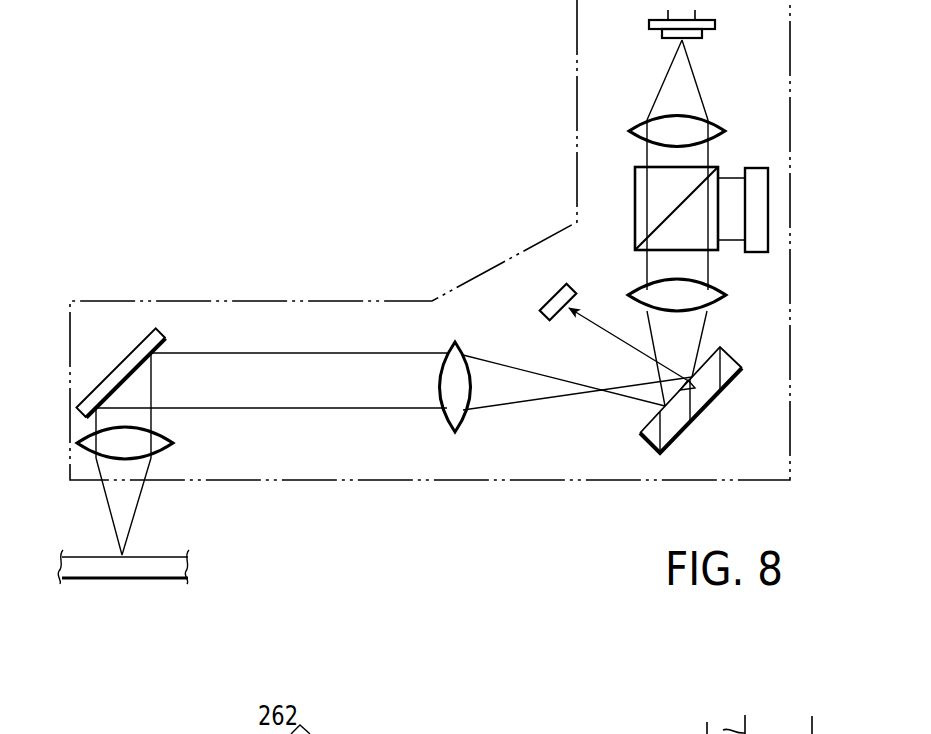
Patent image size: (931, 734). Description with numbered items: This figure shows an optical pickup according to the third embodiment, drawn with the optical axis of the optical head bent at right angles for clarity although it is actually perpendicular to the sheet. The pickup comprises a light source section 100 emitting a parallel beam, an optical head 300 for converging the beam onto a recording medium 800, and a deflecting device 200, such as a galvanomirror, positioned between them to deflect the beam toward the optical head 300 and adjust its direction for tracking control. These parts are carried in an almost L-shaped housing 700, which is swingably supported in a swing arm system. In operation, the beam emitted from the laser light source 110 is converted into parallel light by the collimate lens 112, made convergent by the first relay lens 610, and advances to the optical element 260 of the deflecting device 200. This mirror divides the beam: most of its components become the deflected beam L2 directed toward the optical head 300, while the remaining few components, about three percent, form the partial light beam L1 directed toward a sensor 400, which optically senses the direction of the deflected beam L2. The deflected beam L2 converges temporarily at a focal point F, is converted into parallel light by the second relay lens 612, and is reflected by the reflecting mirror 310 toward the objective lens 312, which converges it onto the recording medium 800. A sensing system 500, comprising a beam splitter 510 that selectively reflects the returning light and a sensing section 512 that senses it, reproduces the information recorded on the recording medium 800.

The light source section 100 is at (639, 72).
The laser light source 110 is at (703, 31).
The collimate lens 112 is at (718, 123).
The deflecting device 200 is at (756, 365).
The optical element 260 is at (683, 427).
The optical head 300 is at (76, 369).
The reflecting mirror 310 is at (117, 376).
The objective lens 312 is at (170, 440).
The sensor 400 is at (540, 312).
The sensing system 500 is at (744, 145).
The beam splitter 510 is at (635, 222).
The sensing section 512 is at (768, 198).
The first relay lens 610 is at (718, 292).
The second relay lens 612 is at (467, 426).
The housing 700 is at (331, 301).
The recording medium 800 is at (175, 566).
The partial light beam L1 is at (600, 340).
The deflected beam L2 is at (343, 409).
The focal point F is at (600, 390).